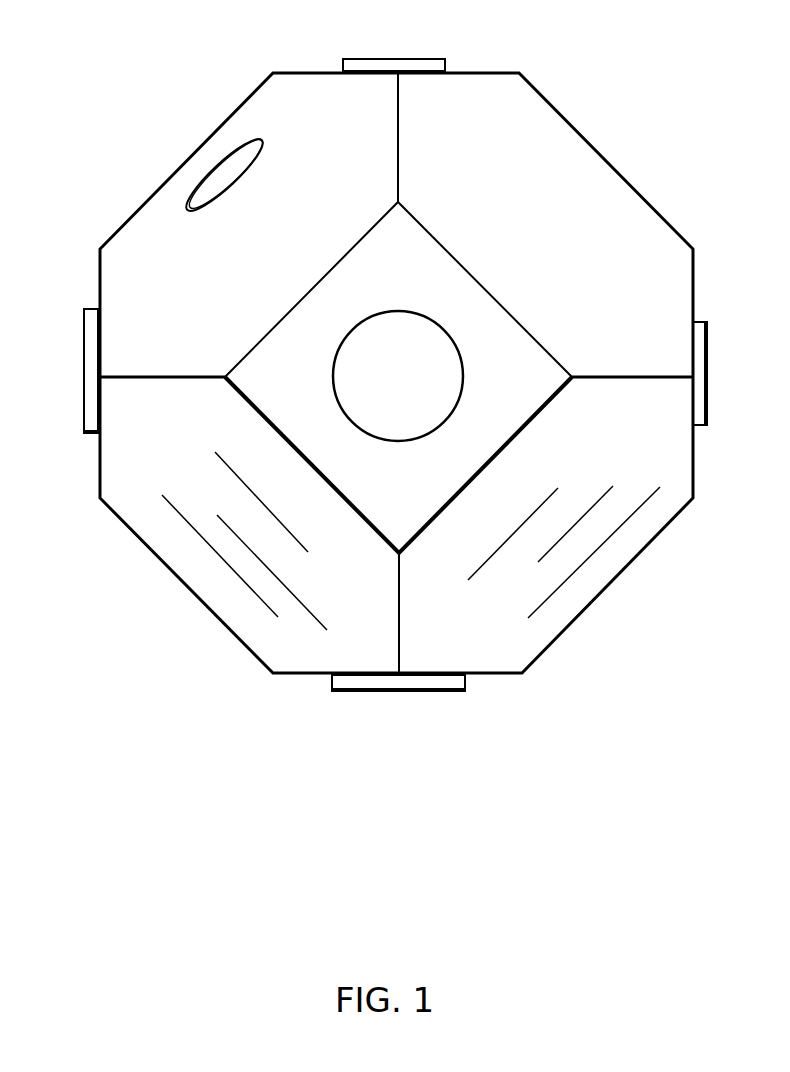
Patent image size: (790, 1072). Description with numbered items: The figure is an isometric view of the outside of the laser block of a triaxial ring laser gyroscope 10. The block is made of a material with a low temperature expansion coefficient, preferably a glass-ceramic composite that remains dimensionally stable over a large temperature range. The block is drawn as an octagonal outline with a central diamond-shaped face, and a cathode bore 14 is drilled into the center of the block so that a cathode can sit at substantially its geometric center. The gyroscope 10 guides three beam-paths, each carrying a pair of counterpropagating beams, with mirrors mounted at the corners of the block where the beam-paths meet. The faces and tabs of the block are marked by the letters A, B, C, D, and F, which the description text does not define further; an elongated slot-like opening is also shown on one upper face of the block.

The triaxial ring laser gyroscope 10 is at (630, 127).
The cathode bore 14 is at (222, 195).
The tab A is at (390, 59).
The aperture B is at (428, 313).
The tab C is at (708, 373).
The tab D is at (400, 692).
The tab F is at (85, 377).